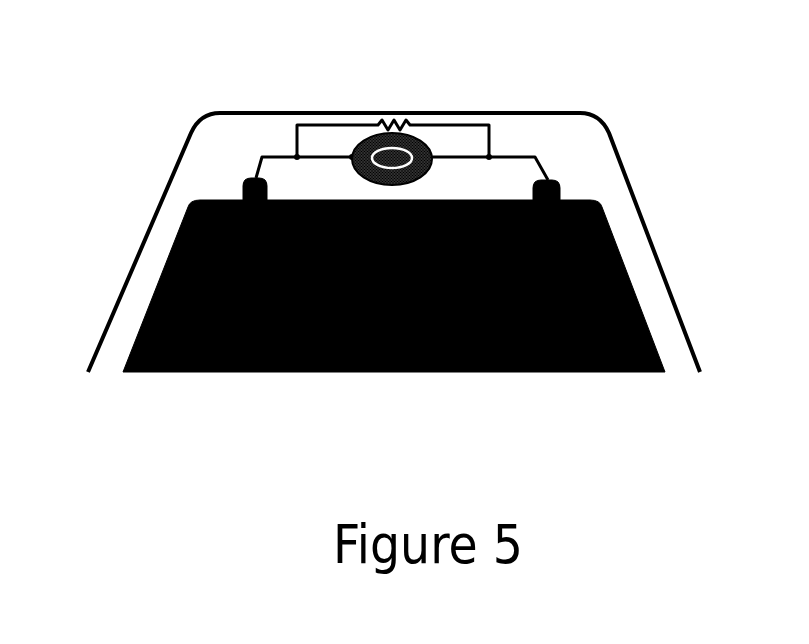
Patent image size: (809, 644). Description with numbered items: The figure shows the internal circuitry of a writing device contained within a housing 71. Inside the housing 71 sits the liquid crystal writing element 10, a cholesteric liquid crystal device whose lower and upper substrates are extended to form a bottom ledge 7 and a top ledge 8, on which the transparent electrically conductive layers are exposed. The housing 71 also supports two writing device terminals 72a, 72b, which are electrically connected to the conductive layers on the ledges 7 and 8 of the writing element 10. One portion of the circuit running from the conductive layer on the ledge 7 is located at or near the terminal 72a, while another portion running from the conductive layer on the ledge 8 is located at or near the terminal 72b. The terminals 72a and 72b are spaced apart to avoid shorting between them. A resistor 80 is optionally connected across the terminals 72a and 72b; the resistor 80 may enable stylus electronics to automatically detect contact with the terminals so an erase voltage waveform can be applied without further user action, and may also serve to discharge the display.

The bottom ledge 7 is at (243, 185).
The top ledge 8 is at (548, 180).
The liquid crystal writing element 10 is at (167, 258).
The housing 71 is at (660, 280).
The writing device terminal 72a is at (352, 145).
The writing device terminal 72b is at (430, 144).
The resistor 80 is at (388, 120).